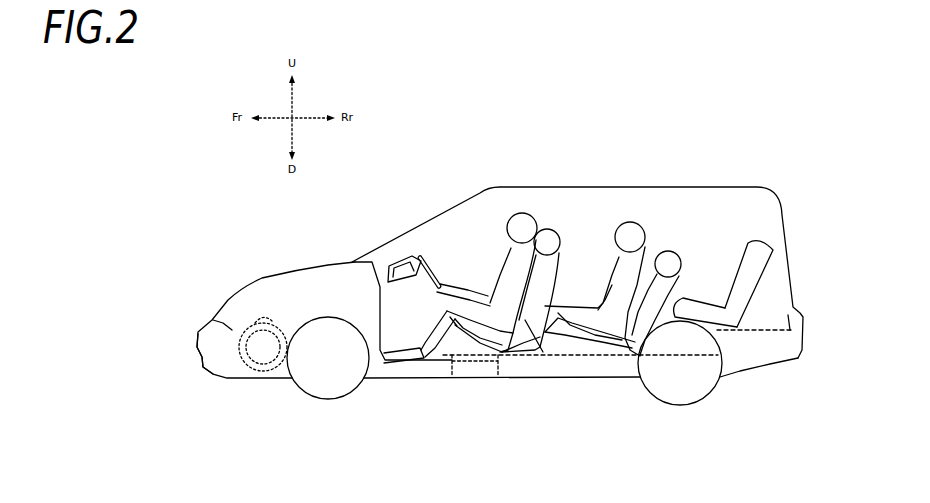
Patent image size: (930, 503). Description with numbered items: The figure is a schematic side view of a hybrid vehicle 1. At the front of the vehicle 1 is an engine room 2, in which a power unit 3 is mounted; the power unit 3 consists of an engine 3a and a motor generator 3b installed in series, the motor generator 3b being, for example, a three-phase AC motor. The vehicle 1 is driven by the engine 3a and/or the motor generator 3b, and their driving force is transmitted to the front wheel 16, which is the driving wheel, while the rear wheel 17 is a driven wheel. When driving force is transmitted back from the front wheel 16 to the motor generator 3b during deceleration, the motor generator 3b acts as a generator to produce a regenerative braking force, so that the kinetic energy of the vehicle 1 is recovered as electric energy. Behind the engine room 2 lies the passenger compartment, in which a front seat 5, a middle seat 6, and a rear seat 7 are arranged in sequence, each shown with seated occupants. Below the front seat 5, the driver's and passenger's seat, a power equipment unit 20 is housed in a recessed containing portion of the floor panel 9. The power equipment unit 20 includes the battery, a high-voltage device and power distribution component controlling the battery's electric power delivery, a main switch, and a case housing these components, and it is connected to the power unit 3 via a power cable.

The vehicle 1 is at (555, 143).
The engine room 2 is at (211, 319).
The power unit 3 is at (254, 334).
The engine 3a is at (243, 364).
The motor generator 3b is at (265, 366).
The front seat 5 is at (541, 350).
The middle seat 6 is at (635, 340).
The rear seat 7 is at (745, 290).
The floor panel 9 is at (588, 232).
The front wheel 16 is at (325, 385).
The rear wheel 17 is at (675, 387).
The power equipment unit 20 is at (465, 378).